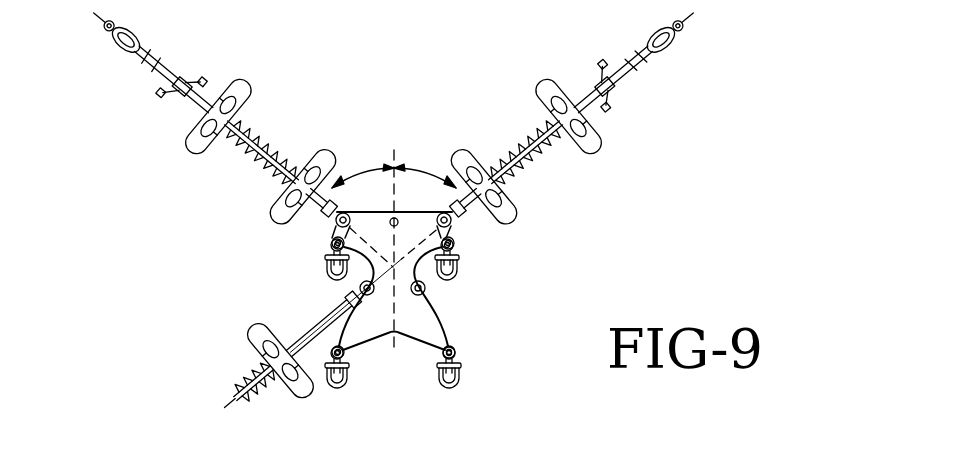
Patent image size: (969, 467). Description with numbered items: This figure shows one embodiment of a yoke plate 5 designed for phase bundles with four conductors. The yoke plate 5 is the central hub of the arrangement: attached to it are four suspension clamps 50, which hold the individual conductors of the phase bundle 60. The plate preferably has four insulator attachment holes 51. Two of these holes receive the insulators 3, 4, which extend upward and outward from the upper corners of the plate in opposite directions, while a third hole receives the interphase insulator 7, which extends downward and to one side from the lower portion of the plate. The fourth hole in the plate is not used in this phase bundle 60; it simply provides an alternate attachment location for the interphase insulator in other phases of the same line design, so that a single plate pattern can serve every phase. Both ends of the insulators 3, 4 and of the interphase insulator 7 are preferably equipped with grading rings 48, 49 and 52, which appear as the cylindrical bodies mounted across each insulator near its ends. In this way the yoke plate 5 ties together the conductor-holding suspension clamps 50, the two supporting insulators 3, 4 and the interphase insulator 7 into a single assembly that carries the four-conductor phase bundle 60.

The insulator 3 is at (238, 141).
The insulator 4 is at (550, 141).
The yoke plate 5 is at (418, 322).
The interphase insulator 7 is at (252, 377).
The grading ring 48 is at (232, 98).
The grading ring 49 is at (273, 218).
The suspension clamp 50 is at (326, 264).
The insulator attachment hole 51 is at (425, 300).
The grading ring 52 is at (250, 332).
The phase bundle 60 is at (366, 101).